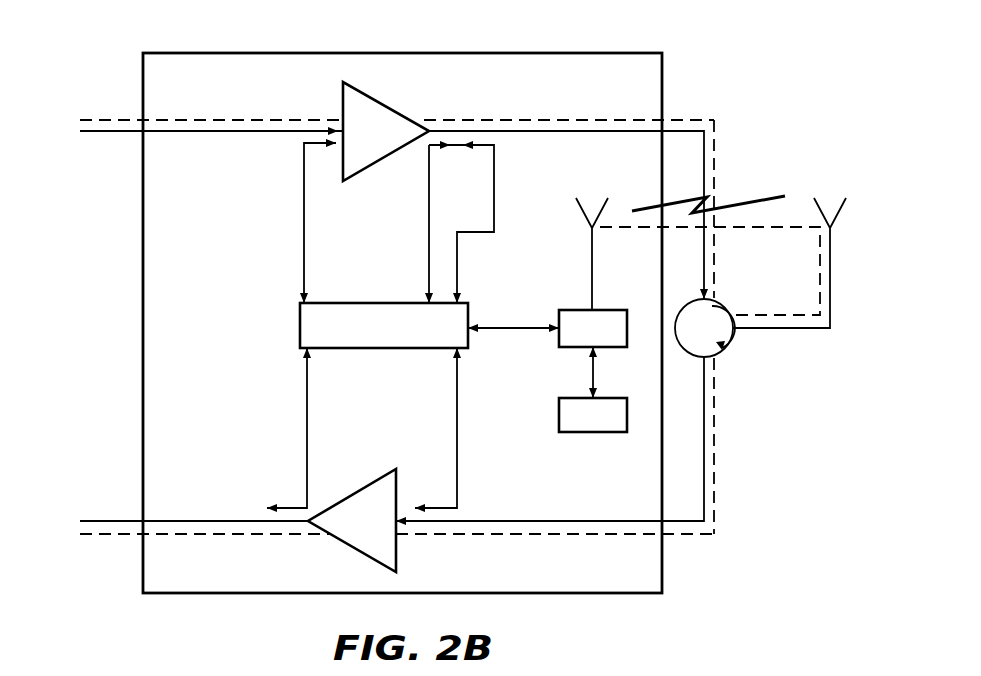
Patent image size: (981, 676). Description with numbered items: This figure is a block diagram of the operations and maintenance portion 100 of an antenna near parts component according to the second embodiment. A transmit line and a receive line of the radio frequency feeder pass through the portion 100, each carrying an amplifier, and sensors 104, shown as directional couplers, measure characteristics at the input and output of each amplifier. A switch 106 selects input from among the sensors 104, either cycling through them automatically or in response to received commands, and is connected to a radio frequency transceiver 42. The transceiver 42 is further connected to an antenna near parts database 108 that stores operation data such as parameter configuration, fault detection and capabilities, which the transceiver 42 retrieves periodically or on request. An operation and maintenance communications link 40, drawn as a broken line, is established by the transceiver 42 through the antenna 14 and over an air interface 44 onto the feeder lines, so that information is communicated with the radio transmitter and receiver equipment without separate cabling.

The operations and maintenance portion 100 is at (662, 560).
The operation and maintenance communications link 40 is at (195, 119).
The sensors 104 is at (304, 158).
The switch 106 is at (300, 317).
The radio frequency transceiver 42 is at (573, 350).
The antenna near parts database 108 is at (571, 433).
The antenna 14 is at (831, 246).
The air interface 44 is at (767, 197).